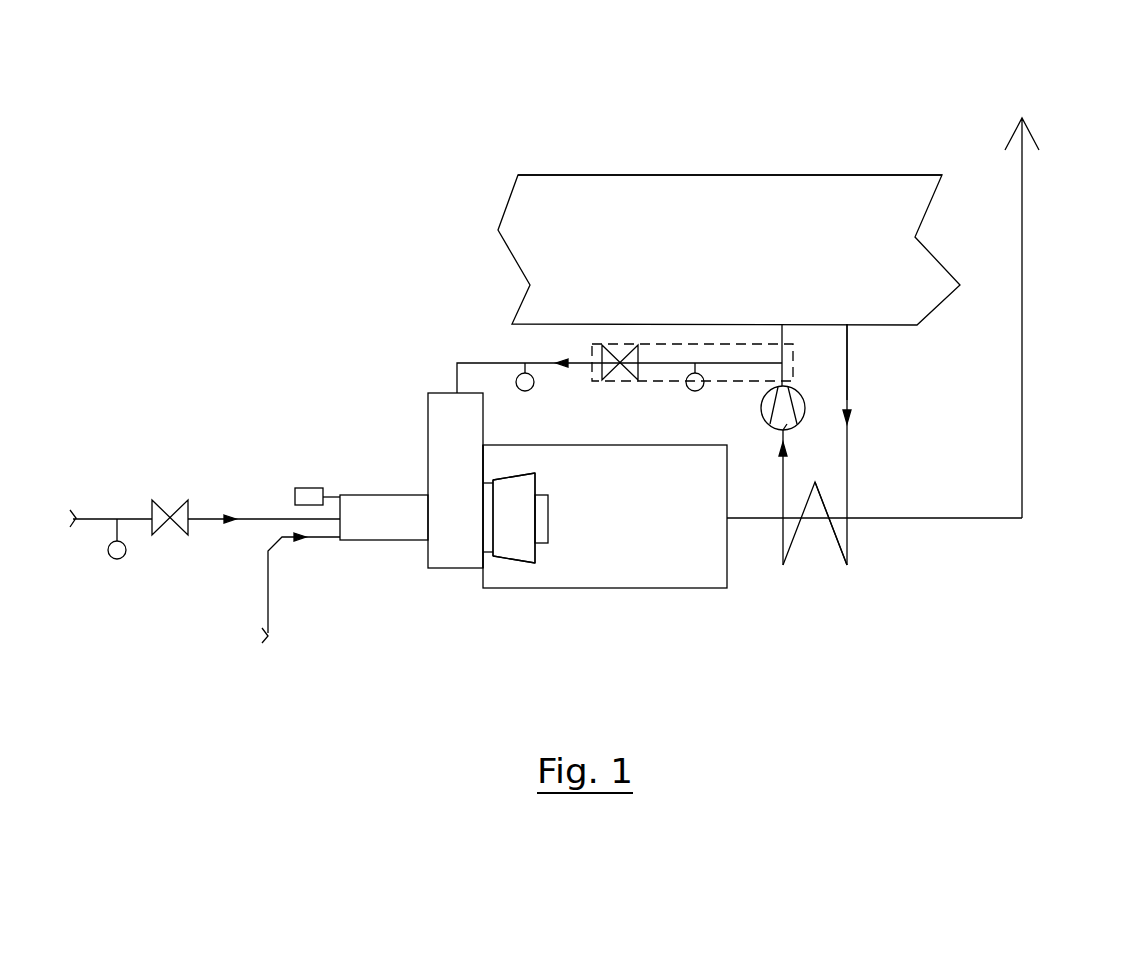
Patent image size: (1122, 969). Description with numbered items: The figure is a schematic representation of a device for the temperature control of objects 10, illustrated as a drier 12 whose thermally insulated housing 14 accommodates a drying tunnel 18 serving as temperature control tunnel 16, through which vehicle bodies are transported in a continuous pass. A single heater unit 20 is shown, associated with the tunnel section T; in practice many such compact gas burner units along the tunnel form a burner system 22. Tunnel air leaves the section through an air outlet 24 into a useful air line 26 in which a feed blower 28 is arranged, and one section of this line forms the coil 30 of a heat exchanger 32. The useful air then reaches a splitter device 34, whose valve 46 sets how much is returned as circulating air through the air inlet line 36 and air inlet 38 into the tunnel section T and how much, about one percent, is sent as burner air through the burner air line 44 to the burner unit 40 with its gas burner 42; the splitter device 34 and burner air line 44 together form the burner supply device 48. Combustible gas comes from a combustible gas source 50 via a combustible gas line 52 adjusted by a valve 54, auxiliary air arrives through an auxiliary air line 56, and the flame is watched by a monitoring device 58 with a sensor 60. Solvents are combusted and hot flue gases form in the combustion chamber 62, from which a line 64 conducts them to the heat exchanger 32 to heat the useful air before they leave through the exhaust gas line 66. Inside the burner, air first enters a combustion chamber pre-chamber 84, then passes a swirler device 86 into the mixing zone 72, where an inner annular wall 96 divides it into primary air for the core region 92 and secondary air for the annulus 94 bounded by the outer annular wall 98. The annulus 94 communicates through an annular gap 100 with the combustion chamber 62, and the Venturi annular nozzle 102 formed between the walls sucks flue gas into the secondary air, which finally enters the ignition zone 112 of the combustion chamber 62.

The device for the temperature control of objects 10 is at (492, 115).
The drier 12 is at (668, 152).
The tunnel section T is at (750, 170).
The thermally insulated housing 14 is at (787, 175).
The temperature control tunnel 16 is at (872, 203).
The drying tunnel 18 is at (922, 190).
The heater unit 20 is at (355, 380).
The burner system 22 is at (350, 283).
The air outlet 24 is at (847, 322).
The useful air line 26 is at (847, 378).
The feed blower 28 is at (787, 430).
The coil 30 is at (845, 548).
The heat exchanger 32 is at (812, 540).
The splitter device 34 is at (690, 345).
The air inlet line 36 is at (783, 338).
The air inlet 38 is at (782, 315).
The burner unit 40 is at (518, 573).
The gas burner 42 is at (418, 532).
The burner air line 44 is at (473, 362).
The valve 46 is at (618, 348).
The burner supply device 48 is at (575, 345).
The combustible gas source 50 is at (105, 518).
The combustible gas line 52 is at (222, 518).
The valve 54 is at (160, 540).
The auxiliary air line 56 is at (268, 593).
The monitoring device 58 is at (303, 488).
The sensor 60 is at (318, 488).
The combustion chamber 62 is at (622, 568).
The line 64 is at (740, 545).
The exhaust gas line 66 is at (1023, 463).
The mixing zone 72 is at (530, 470).
The combustion chamber pre-chamber 84 is at (437, 400).
The swirler device 86 is at (483, 540).
The core region 92 is at (543, 515).
The annulus 94 is at (522, 492).
The inner annular wall 96 is at (525, 548).
The outer annular wall 98 is at (525, 545).
The annular gap 100 is at (487, 478).
The Venturi annular nozzle 102 is at (503, 560).
The ignition zone 112 is at (572, 500).